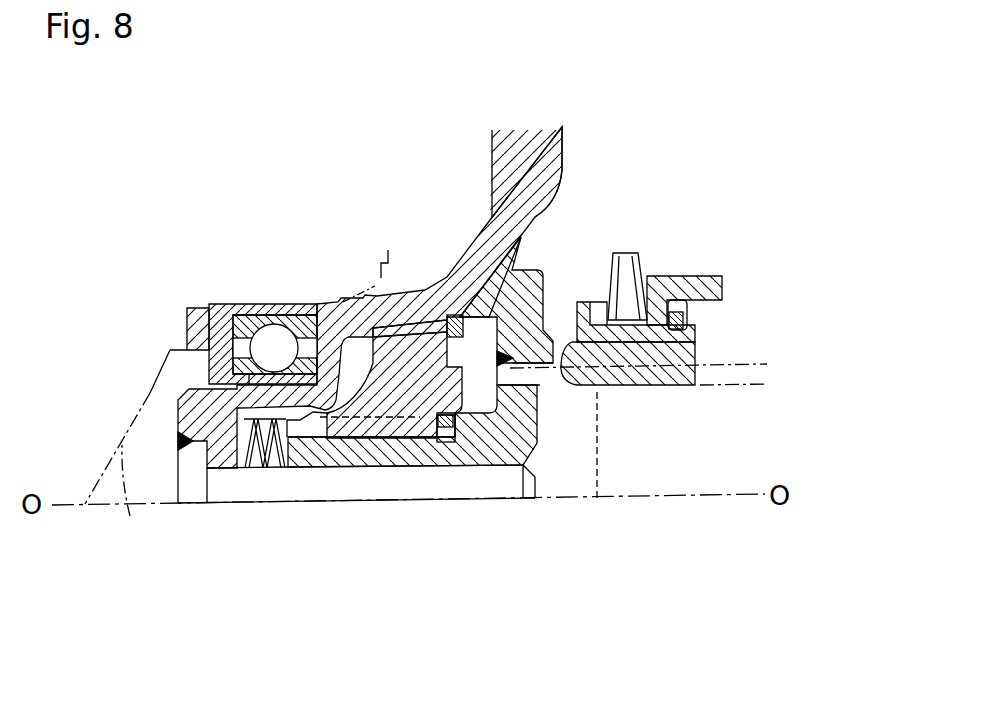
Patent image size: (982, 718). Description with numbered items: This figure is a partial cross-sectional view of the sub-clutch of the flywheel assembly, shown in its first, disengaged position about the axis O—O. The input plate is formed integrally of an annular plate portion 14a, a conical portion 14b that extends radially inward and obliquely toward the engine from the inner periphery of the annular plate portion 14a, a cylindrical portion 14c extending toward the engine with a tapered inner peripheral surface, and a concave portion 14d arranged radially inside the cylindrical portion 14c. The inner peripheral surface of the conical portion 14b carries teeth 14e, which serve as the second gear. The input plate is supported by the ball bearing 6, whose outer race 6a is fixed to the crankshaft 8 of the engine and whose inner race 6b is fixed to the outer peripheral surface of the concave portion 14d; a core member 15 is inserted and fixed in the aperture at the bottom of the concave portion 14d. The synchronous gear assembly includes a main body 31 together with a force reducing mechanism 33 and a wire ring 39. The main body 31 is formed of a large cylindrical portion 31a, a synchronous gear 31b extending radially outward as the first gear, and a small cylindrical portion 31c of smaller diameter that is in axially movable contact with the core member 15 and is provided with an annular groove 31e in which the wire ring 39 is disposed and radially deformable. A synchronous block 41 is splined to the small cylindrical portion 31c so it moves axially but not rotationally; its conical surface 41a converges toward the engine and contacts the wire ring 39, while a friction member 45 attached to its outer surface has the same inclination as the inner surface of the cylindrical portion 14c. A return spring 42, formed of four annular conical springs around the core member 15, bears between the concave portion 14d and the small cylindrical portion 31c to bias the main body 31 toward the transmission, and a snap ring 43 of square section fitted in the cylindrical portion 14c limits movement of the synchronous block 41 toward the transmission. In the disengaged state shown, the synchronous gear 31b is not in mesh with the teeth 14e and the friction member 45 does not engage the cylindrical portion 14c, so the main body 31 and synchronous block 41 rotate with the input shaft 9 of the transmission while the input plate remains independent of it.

The ball bearing 6 is at (228, 347).
The outer race 6a is at (251, 324).
The inner race 6b is at (238, 388).
The crankshaft 8 is at (128, 500).
The input shaft 9 is at (725, 364).
The annular plate portion 14a is at (491, 162).
The conical portion 14b is at (473, 243).
The cylindrical portion 14c is at (385, 296).
The concave portion 14d is at (213, 418).
The teeth 14e is at (540, 240).
The core member 15 is at (493, 487).
The main body 31 is at (542, 444).
The large cylindrical portion 31a is at (663, 355).
The synchronous gear 31b is at (523, 248).
The small cylindrical portion 31c is at (350, 455).
The annular groove 31e is at (445, 445).
The force reducing mechanism 33 is at (662, 249).
The wire ring 39 is at (411, 447).
The synchronous block 41 is at (365, 363).
The conical surface 41a is at (565, 382).
The return spring 42 is at (255, 471).
The snap ring 43 is at (453, 313).
The friction member 45 is at (410, 326).